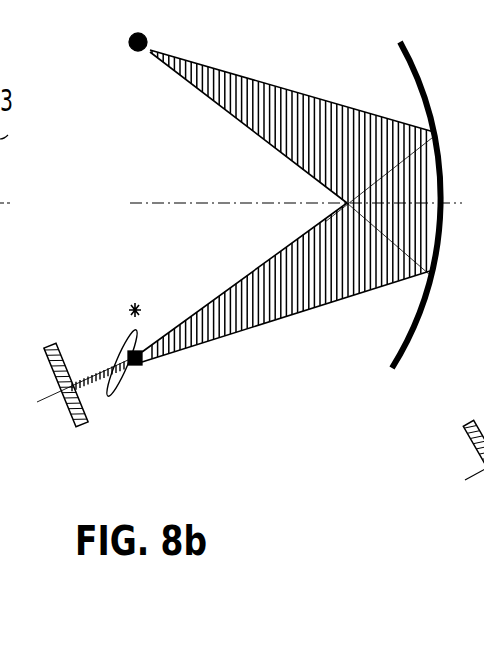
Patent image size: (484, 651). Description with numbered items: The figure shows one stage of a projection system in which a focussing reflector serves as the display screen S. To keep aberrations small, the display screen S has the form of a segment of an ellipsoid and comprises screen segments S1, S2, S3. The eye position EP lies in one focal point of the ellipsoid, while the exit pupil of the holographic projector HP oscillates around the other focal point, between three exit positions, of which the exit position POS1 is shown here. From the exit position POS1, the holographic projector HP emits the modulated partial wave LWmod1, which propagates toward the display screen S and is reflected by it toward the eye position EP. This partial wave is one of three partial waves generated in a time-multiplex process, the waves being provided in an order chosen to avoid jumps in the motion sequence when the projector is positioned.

The eye position EP is at (115, 55).
The modulated partial wave LWmod1 is at (282, 173).
The display screen S is at (402, 205).
The screen segment S1 is at (460, 278).
The screen segment S2 is at (447, 341).
The screen segment S3 is at (462, 130).
The exit position POS1 is at (125, 352).
The holographic projector HP is at (84, 407).